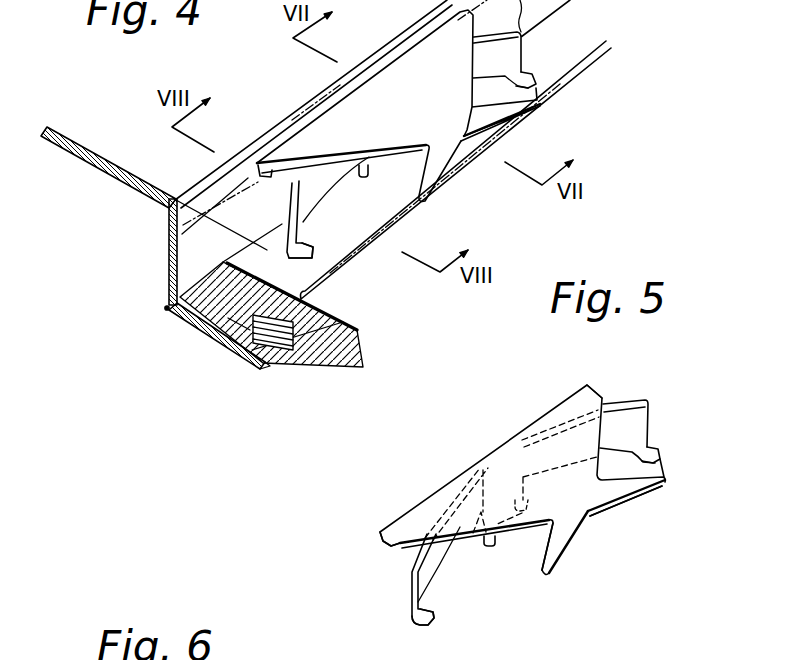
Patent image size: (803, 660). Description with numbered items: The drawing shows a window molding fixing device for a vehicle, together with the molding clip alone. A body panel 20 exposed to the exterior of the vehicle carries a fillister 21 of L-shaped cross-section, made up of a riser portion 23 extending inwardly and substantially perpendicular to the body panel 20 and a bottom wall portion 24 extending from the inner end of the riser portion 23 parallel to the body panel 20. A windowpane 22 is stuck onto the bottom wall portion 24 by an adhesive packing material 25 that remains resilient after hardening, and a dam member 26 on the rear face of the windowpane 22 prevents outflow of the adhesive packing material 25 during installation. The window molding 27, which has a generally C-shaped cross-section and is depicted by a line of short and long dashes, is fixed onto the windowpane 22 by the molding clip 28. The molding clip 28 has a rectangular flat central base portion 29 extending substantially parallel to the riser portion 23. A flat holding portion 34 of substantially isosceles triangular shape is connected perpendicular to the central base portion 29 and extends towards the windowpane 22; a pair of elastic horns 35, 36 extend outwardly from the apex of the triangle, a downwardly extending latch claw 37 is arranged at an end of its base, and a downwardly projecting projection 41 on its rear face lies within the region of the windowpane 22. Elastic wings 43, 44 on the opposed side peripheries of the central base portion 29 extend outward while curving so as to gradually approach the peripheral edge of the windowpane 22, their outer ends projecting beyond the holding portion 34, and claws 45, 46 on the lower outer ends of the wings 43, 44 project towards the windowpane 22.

In FIG. 4, the body panel 20 is at (118, 157).
In FIG. 4, the fillister 21 is at (166, 310).
In FIG. 4, the windowpane 22 is at (343, 324).
In FIG. 4, the riser portion 23 is at (167, 253).
In FIG. 4, the bottom wall portion 24 is at (203, 325).
In FIG. 4, the adhesive packing material 25 is at (228, 318).
In FIG. 4, the dam member 26 is at (272, 352).
In FIG. 4, the window molding 27 is at (328, 284).
In FIG. 4, the molding clip 28 is at (387, 57).
In FIG. 5, the molding clip 28 is at (505, 435).
In FIG. 5, the central base portion 29 is at (527, 522).
In FIG. 4, the holding portion 34 is at (300, 138).
In FIG. 5, the holding portion 34 is at (604, 394).
In FIG. 4, the elastic horn 35 is at (435, 193).
In FIG. 5, the elastic horn 35 is at (556, 562).
In FIG. 4, the elastic horn 36 is at (541, 108).
In FIG. 5, the elastic horn 36 is at (638, 492).
In FIG. 4, the latch claw 37 is at (267, 180).
In FIG. 5, the latch claw 37 is at (386, 548).
In FIG. 4, the projection 41 is at (367, 172).
In FIG. 5, the projection 41 is at (483, 543).
In FIG. 4, the elastic wing 43 is at (303, 207).
In FIG. 5, the elastic wing 43 is at (412, 606).
In FIG. 5, the elastic wing 44 is at (648, 422).
In FIG. 4, the claw 45 is at (318, 255).
In FIG. 5, the claw 45 is at (428, 623).
In FIG. 4, the claw 46 is at (528, 90).
In FIG. 5, the claw 46 is at (660, 452).